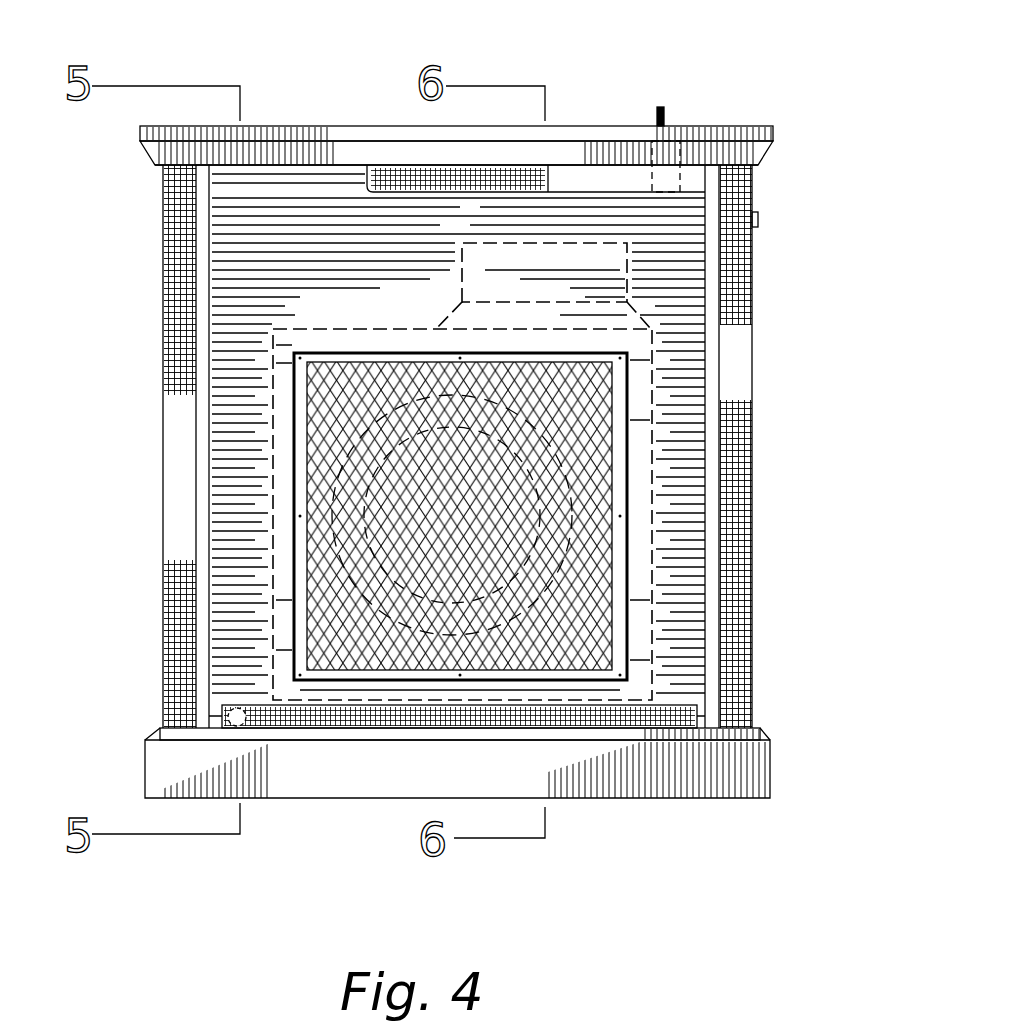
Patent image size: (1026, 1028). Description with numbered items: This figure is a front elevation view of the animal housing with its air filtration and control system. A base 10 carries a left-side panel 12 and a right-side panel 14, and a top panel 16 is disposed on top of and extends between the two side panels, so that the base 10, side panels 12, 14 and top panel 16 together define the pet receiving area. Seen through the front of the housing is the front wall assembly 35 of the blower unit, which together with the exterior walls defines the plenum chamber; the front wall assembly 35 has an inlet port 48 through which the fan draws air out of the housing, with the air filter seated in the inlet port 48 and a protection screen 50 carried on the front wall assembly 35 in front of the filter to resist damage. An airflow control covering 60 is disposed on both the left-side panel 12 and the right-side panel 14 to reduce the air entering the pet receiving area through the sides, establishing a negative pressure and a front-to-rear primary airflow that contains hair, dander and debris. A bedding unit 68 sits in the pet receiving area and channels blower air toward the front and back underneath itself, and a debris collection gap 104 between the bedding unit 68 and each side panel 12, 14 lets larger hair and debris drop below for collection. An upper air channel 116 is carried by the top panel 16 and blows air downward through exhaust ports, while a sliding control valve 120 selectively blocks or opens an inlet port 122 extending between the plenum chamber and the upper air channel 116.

The base 10 is at (608, 772).
The left-side panel 12 is at (200, 513).
The right-side panel 14 is at (710, 490).
The top panel 16 is at (308, 128).
The front wall assembly 35 is at (300, 258).
The inlet port 48 is at (340, 434).
The protection screen 50 is at (342, 597).
The airflow control covering 60 is at (182, 295).
The bedding unit 68 is at (343, 720).
The debris collection gap 104 is at (215, 712).
The upper air channel 116 is at (582, 180).
The control valve 120 is at (664, 118).
The inlet port 122 is at (690, 179).